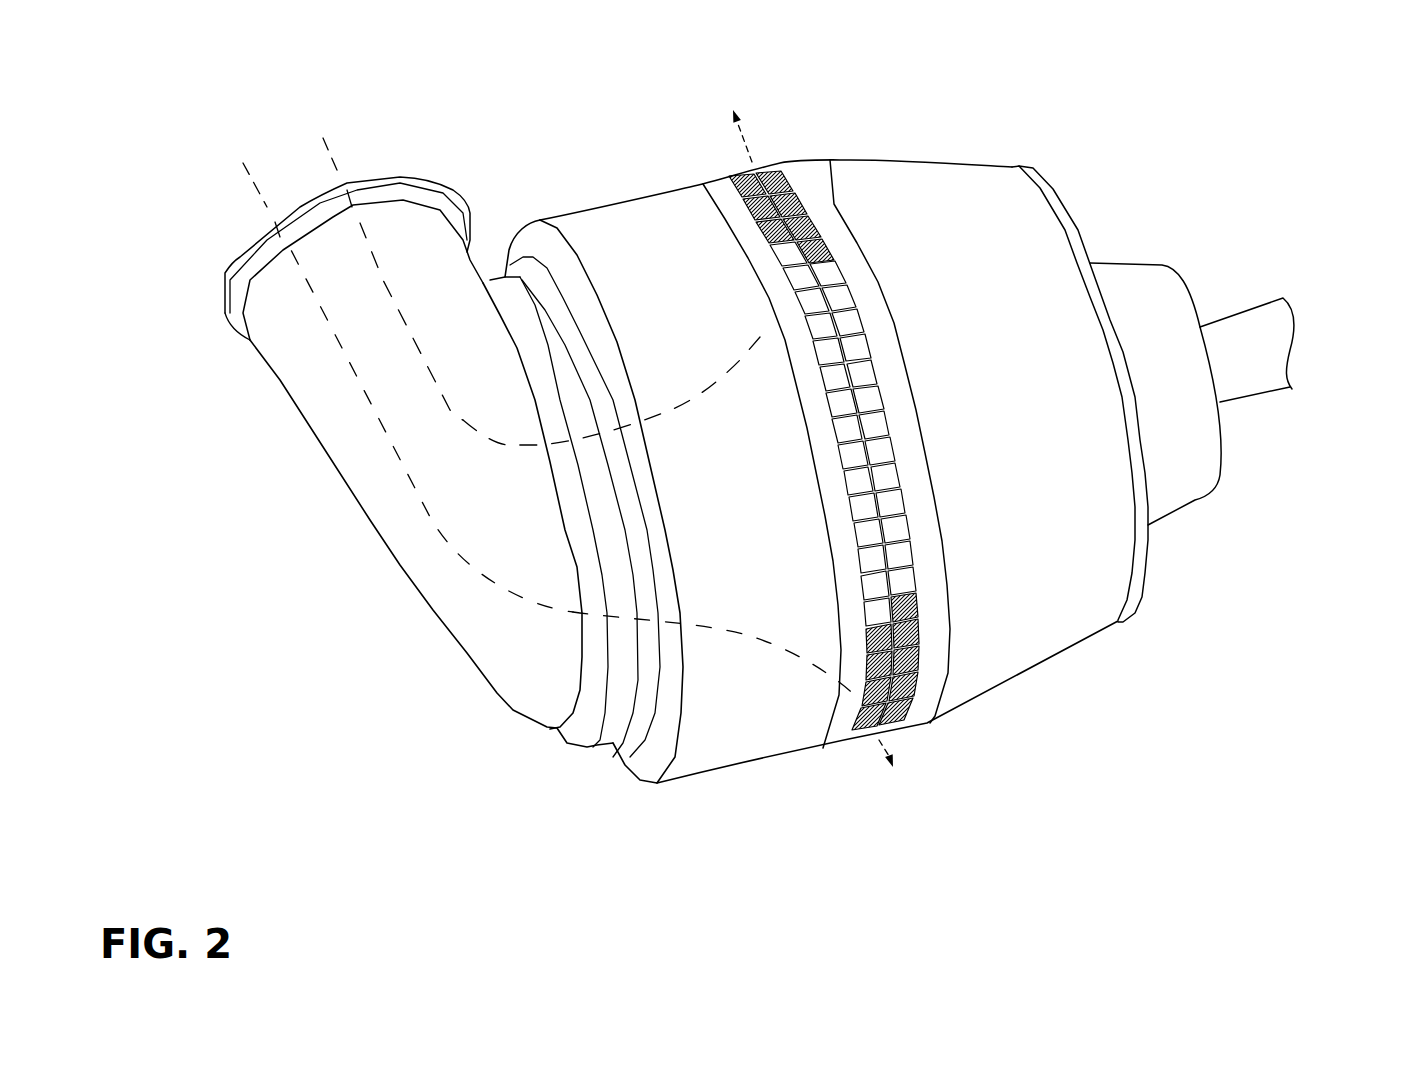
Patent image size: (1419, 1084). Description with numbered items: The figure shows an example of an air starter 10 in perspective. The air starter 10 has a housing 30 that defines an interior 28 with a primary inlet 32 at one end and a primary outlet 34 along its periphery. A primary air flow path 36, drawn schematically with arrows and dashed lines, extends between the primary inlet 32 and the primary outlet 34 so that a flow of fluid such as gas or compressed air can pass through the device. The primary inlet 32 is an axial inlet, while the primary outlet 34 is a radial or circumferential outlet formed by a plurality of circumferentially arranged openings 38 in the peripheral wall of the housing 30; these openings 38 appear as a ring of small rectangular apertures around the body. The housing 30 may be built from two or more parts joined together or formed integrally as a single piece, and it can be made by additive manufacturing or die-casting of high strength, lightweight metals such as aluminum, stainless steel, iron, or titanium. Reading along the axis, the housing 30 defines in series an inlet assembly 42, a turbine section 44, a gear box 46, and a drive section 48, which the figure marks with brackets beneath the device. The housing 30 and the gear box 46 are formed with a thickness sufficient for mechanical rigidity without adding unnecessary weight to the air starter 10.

The air starter 10 is at (1137, 79).
The interior 28 is at (229, 247).
The housing 30 is at (603, 200).
The primary inlet 32 is at (428, 170).
The primary outlet 34 is at (801, 173).
The primary air flow path 36 is at (760, 337).
The circumferentially arranged openings 38 is at (779, 168).
The inlet assembly 42 is at (403, 897).
The turbine section 44 is at (665, 828).
The gear box 46 is at (842, 787).
The drive section 48 is at (1173, 680).